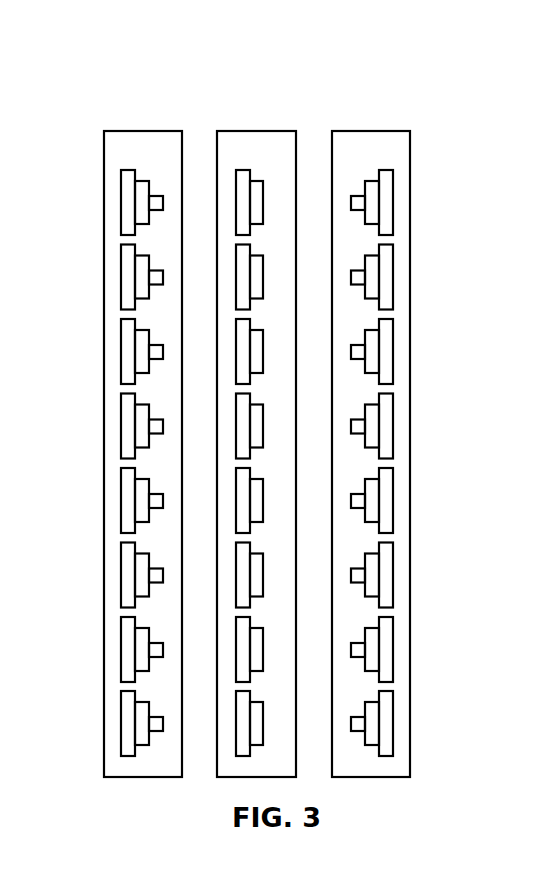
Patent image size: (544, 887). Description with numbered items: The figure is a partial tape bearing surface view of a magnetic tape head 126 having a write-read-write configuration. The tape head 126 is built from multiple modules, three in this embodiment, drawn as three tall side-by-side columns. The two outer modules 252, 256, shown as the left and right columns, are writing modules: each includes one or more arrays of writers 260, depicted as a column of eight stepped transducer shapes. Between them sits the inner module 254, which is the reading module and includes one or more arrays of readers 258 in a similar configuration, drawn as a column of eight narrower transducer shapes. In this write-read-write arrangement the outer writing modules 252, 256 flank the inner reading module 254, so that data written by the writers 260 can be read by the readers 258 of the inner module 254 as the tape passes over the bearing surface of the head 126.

The tape head 126 is at (70, 101).
The outer module 252 is at (124, 101).
The inner module 254 is at (245, 101).
The outer module 256 is at (350, 101).
The readers 258 is at (263, 350).
The writers 260 is at (393, 422).